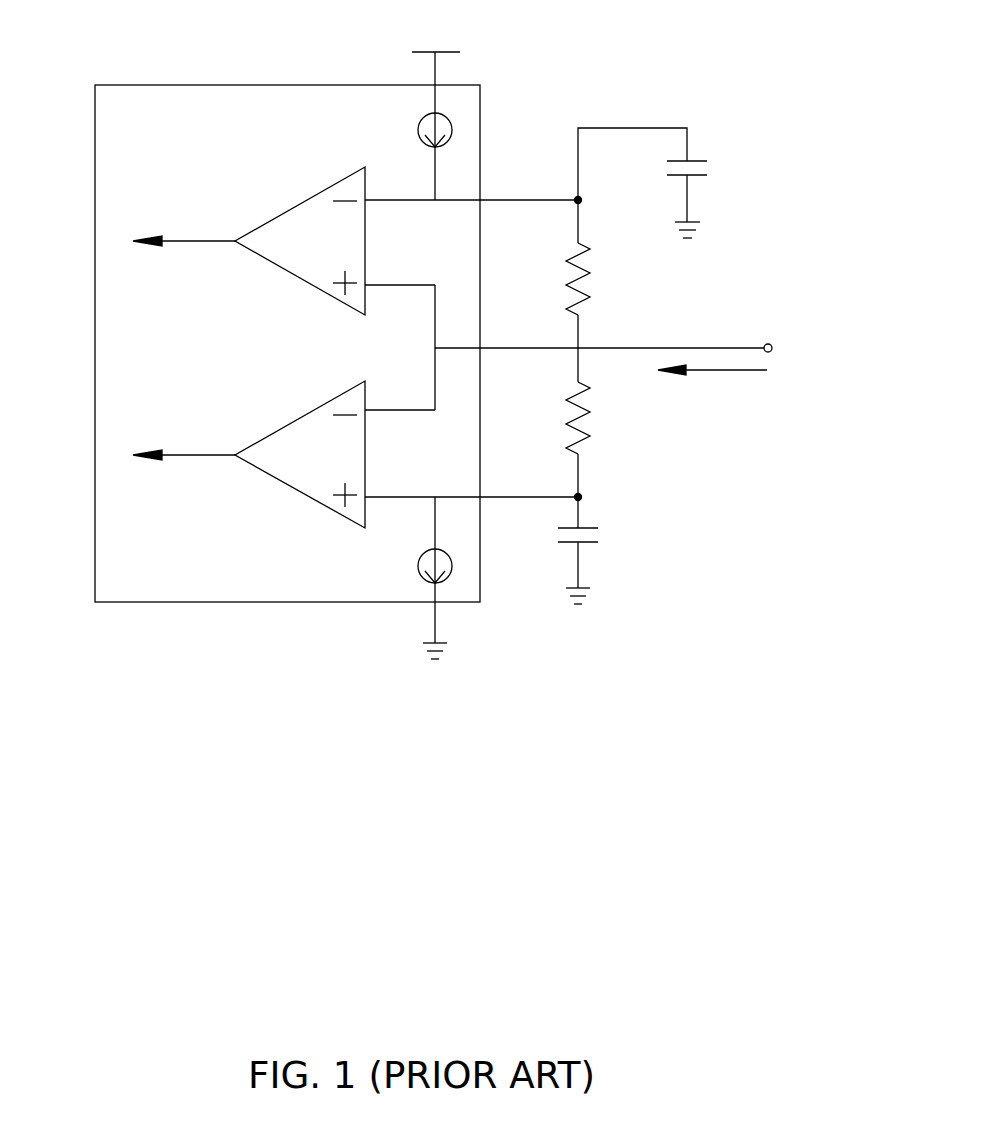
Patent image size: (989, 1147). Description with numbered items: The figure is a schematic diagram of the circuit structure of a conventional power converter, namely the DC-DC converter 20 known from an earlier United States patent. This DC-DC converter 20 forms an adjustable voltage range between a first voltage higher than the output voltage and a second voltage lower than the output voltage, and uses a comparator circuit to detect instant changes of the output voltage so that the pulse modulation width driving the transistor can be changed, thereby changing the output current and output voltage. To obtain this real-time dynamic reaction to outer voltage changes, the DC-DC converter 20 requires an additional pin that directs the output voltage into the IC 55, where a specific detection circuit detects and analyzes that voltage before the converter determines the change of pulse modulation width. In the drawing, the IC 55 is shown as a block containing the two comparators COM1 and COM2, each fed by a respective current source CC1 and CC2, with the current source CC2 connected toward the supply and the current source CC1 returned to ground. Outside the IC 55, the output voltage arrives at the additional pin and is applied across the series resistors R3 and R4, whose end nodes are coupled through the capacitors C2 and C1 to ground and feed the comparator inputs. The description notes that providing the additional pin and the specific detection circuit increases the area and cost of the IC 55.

The DC-DC converter 20 is at (692, 88).
The IC 55 is at (160, 127).
The first comparator COM1 is at (340, 470).
The second comparator COM2 is at (340, 254).
The first current source CC1 is at (409, 569).
The second current source CC2 is at (409, 130).
The resistor R3 is at (561, 279).
The resistor R4 is at (561, 418).
The capacitor C1 is at (593, 539).
The capacitor C2 is at (701, 171).